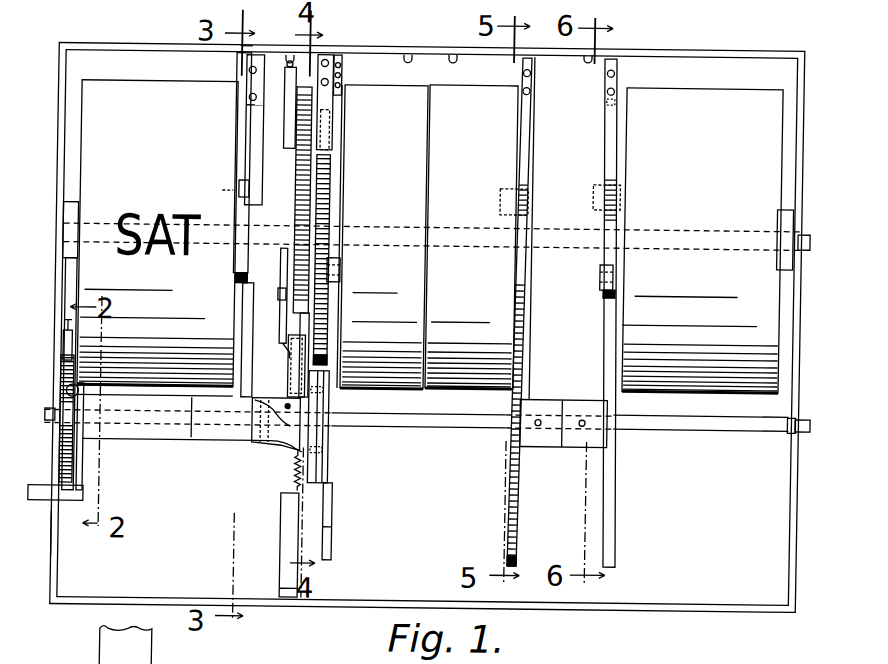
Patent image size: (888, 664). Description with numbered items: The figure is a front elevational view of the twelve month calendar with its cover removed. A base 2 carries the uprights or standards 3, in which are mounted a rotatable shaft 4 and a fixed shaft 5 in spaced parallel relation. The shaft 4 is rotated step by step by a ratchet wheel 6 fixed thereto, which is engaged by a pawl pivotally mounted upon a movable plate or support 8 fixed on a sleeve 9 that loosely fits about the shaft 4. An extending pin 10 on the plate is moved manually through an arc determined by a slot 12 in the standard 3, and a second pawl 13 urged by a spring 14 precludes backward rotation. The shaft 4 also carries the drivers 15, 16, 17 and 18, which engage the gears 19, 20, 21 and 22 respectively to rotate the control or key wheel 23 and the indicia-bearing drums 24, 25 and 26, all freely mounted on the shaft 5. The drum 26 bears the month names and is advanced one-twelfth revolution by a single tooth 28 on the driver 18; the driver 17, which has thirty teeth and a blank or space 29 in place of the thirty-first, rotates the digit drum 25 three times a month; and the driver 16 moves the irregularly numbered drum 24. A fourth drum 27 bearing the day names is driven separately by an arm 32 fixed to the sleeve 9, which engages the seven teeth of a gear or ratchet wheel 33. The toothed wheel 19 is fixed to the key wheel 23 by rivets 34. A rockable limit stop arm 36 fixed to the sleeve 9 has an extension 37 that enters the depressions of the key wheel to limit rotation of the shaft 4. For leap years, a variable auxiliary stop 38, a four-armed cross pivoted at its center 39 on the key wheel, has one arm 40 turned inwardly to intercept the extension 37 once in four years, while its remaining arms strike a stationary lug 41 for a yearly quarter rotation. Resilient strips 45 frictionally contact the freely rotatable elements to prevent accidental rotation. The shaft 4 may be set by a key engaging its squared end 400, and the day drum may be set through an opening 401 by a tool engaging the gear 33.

The base 2 is at (705, 609).
The uprights or standards 3 is at (57, 168).
The rotatable shaft 4 is at (46, 418).
The fixed shaft 5 is at (809, 239).
The ratchet wheel 6 is at (62, 458).
The movable plate or support 8 is at (85, 460).
The sleeve 9 is at (157, 443).
The extending pin 10 is at (50, 500).
The slot 12 is at (57, 526).
The second pawl 13 is at (66, 406).
The spring 14 is at (63, 349).
The driver 15 is at (332, 471).
The driver 16 is at (335, 557).
The driver 17 is at (519, 556).
The driver 18 is at (616, 558).
The toothed wheel 19 is at (320, 333).
The gear 20 is at (341, 263).
The gear 21 is at (521, 288).
The gear 22 is at (606, 297).
The control or key wheel 23 is at (294, 180).
The indicia-bearing drum 24 is at (384, 389).
The indicia-bearing drum 25 is at (457, 388).
The indicia-bearing drum 26 is at (676, 392).
The fourth drum 27 is at (196, 442).
The single tooth 28 is at (614, 287).
The blank or space 29 is at (523, 305).
The arm 32 is at (237, 305).
The gear or ratchet wheel 33 is at (237, 188).
The rivets 34 is at (355, 194).
The rockable limit stop arm 36 is at (248, 279).
The extension 37 is at (297, 356).
The variable auxiliary stop or abutment 38 is at (280, 314).
The pivot center 39 is at (277, 299).
The intercepting abutment arm 40 is at (285, 347).
The stationary lug 41 is at (282, 122).
The resilient strips 45 is at (255, 168).
The squared end 400 is at (808, 428).
The opening 401 is at (252, 50).